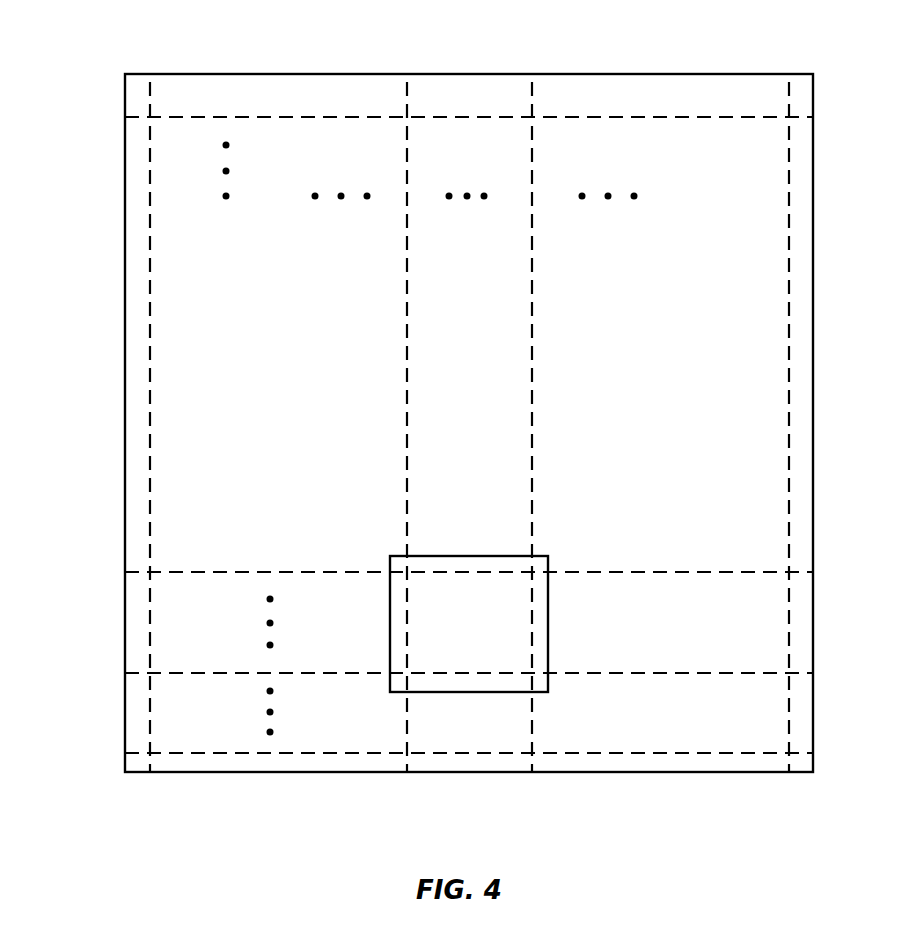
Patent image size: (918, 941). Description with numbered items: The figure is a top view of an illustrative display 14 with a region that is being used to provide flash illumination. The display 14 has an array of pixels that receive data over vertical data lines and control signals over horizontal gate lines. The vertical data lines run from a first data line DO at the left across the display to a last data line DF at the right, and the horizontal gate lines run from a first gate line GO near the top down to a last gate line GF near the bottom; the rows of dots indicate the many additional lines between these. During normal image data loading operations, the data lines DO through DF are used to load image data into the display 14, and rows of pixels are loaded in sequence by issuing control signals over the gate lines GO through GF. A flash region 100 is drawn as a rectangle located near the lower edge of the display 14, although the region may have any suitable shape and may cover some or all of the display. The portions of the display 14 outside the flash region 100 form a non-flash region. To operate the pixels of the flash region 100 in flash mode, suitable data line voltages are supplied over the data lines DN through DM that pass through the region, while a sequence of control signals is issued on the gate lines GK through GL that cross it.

The display 14 is at (648, 74).
The data line DO is at (152, 92).
The data line DN is at (409, 92).
The data line DM is at (534, 92).
The data line DF is at (787, 92).
The gate line GO is at (208, 118).
The gate line GK is at (207, 571).
The gate line GL is at (207, 672).
The gate line GF is at (207, 752).
The flash region 100 is at (549, 612).